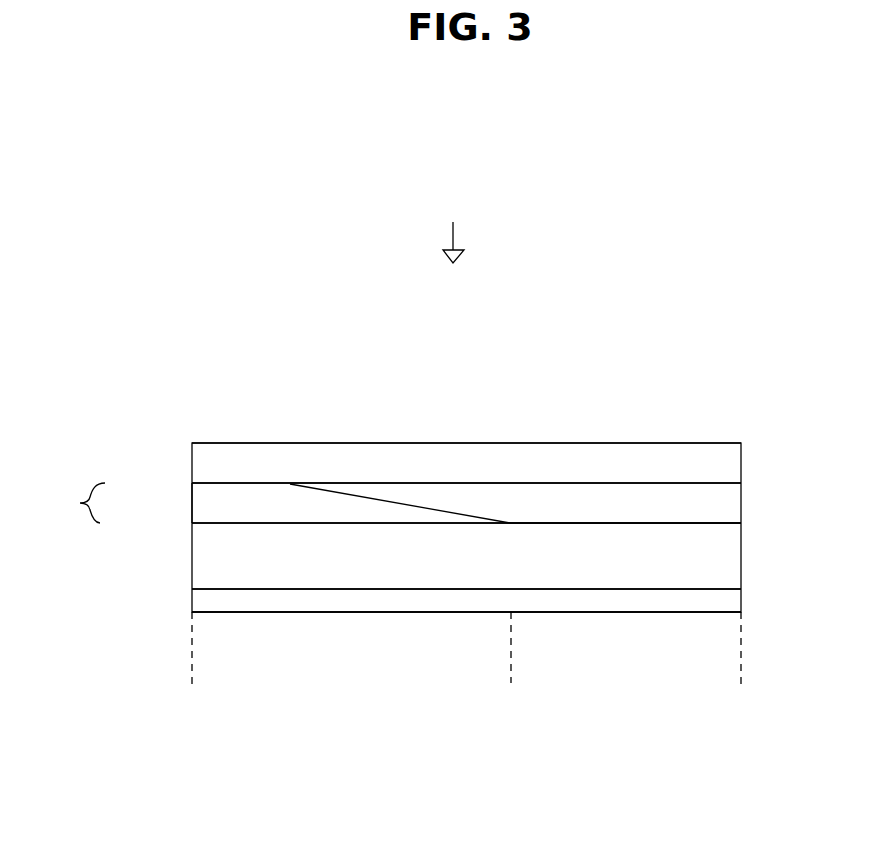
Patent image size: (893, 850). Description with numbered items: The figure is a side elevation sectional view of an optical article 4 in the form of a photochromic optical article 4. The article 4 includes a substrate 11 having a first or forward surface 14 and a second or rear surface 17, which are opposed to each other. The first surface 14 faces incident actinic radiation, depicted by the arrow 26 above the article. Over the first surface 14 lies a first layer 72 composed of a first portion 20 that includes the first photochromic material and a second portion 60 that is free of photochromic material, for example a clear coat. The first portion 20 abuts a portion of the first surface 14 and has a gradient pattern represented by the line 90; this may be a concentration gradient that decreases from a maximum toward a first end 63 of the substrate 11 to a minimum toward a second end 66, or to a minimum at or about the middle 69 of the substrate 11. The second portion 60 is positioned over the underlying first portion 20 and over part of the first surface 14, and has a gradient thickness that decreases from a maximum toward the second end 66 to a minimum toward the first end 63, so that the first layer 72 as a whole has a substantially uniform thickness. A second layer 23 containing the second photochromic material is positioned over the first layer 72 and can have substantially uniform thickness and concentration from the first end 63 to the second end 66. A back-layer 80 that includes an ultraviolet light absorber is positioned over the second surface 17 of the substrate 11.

The photochromic optical article 4 is at (90, 779).
The substrate 11 is at (732, 563).
The first surface 14 is at (610, 518).
The second surface 17 is at (299, 590).
The first portion 20 is at (200, 500).
The second layer 23 is at (732, 462).
The arrow 26 is at (455, 238).
The second portion 60 is at (732, 504).
The first end 63 is at (187, 668).
The second end 66 is at (748, 680).
The middle 69 is at (516, 674).
The first layer 72 is at (72, 502).
The back-layer 80 is at (405, 600).
The line 90 is at (410, 507).